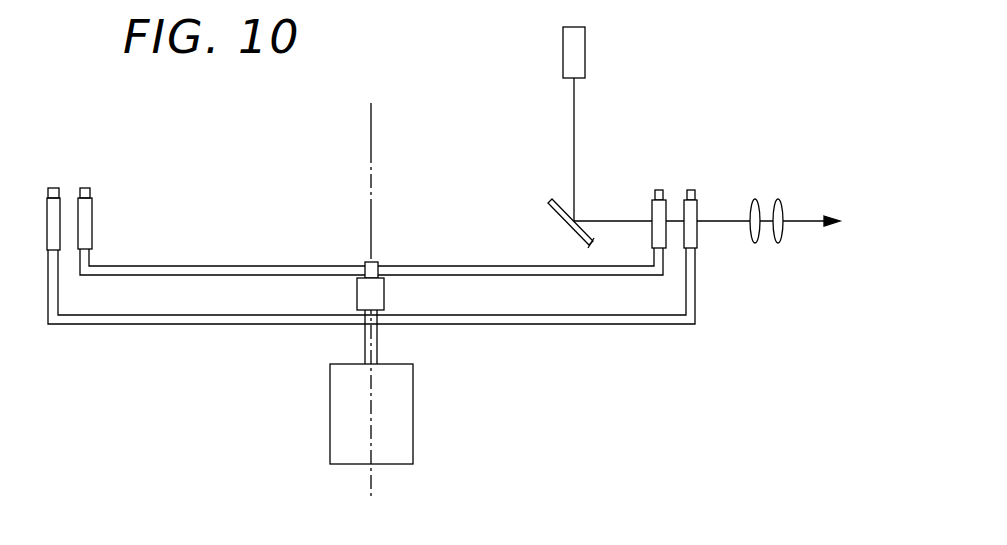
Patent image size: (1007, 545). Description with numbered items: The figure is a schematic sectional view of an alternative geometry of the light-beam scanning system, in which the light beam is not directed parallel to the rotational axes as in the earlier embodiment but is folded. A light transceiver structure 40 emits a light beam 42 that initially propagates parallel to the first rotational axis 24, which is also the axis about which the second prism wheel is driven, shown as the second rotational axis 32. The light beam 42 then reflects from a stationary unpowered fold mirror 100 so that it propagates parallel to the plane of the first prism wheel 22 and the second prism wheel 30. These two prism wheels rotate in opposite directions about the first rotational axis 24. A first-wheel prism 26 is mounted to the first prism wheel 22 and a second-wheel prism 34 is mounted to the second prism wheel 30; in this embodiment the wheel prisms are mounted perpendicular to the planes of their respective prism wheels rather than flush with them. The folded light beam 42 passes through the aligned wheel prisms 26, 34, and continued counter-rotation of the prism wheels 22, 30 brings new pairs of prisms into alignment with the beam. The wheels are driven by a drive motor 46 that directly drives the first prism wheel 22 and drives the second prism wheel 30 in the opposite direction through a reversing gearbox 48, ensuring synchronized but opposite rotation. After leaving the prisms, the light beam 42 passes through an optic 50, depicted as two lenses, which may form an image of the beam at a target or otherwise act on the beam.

The first prism wheel 22 is at (473, 266).
The first rotational axis 24 is at (371, 480).
The first-wheel prism 26 is at (666, 203).
The second prism wheel 30 is at (622, 325).
The second rotational axis 32 is at (372, 170).
The second-wheel prism 34 is at (698, 210).
The light transceiver structure 40 is at (563, 43).
The light beam 42 is at (575, 112).
The drive motor 46 is at (330, 405).
The reversing gearbox 48 is at (384, 292).
The optic 50 is at (787, 243).
The fold mirror 100 is at (548, 212).